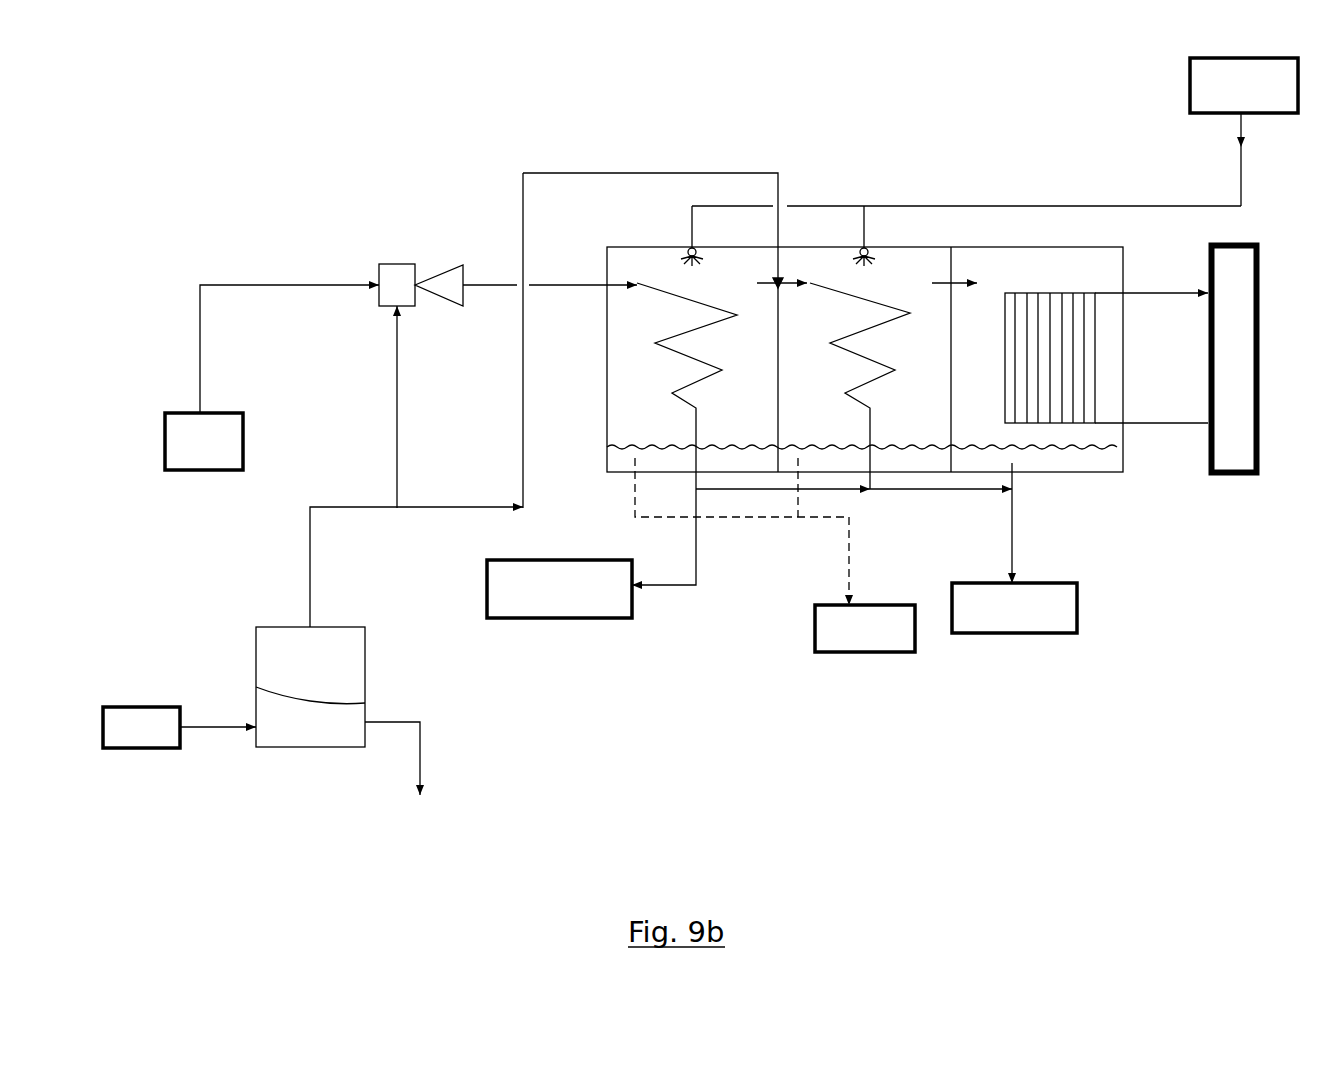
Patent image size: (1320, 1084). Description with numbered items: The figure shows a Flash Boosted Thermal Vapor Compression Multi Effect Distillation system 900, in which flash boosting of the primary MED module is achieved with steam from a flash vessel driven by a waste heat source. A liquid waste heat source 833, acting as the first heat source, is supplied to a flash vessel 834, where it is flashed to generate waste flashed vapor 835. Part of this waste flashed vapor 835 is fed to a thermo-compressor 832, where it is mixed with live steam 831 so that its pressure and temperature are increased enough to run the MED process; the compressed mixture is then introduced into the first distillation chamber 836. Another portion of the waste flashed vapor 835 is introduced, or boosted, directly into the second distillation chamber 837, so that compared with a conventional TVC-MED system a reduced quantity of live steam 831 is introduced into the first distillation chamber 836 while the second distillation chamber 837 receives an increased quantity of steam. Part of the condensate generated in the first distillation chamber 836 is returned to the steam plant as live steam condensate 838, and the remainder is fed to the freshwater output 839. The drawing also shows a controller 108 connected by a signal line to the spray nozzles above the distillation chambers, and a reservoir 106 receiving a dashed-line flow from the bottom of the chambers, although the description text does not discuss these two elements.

The Flash Boosted TVC-MED system 900 is at (692, 93).
The controller 108 is at (1244, 132).
The reservoir 106 is at (865, 628).
The live steam 831 is at (272, 377).
The thermo-compressor 832 is at (382, 258).
The liquid waste heat source 833 is at (179, 727).
The flash vessel 834 is at (297, 735).
The waste flashed vapor 835 is at (310, 582).
The first distillation chamber 836 is at (618, 325).
The second distillation chamber 837 is at (877, 316).
The live steam condensate 838 is at (559, 589).
The freshwater output 839 is at (1014, 608).